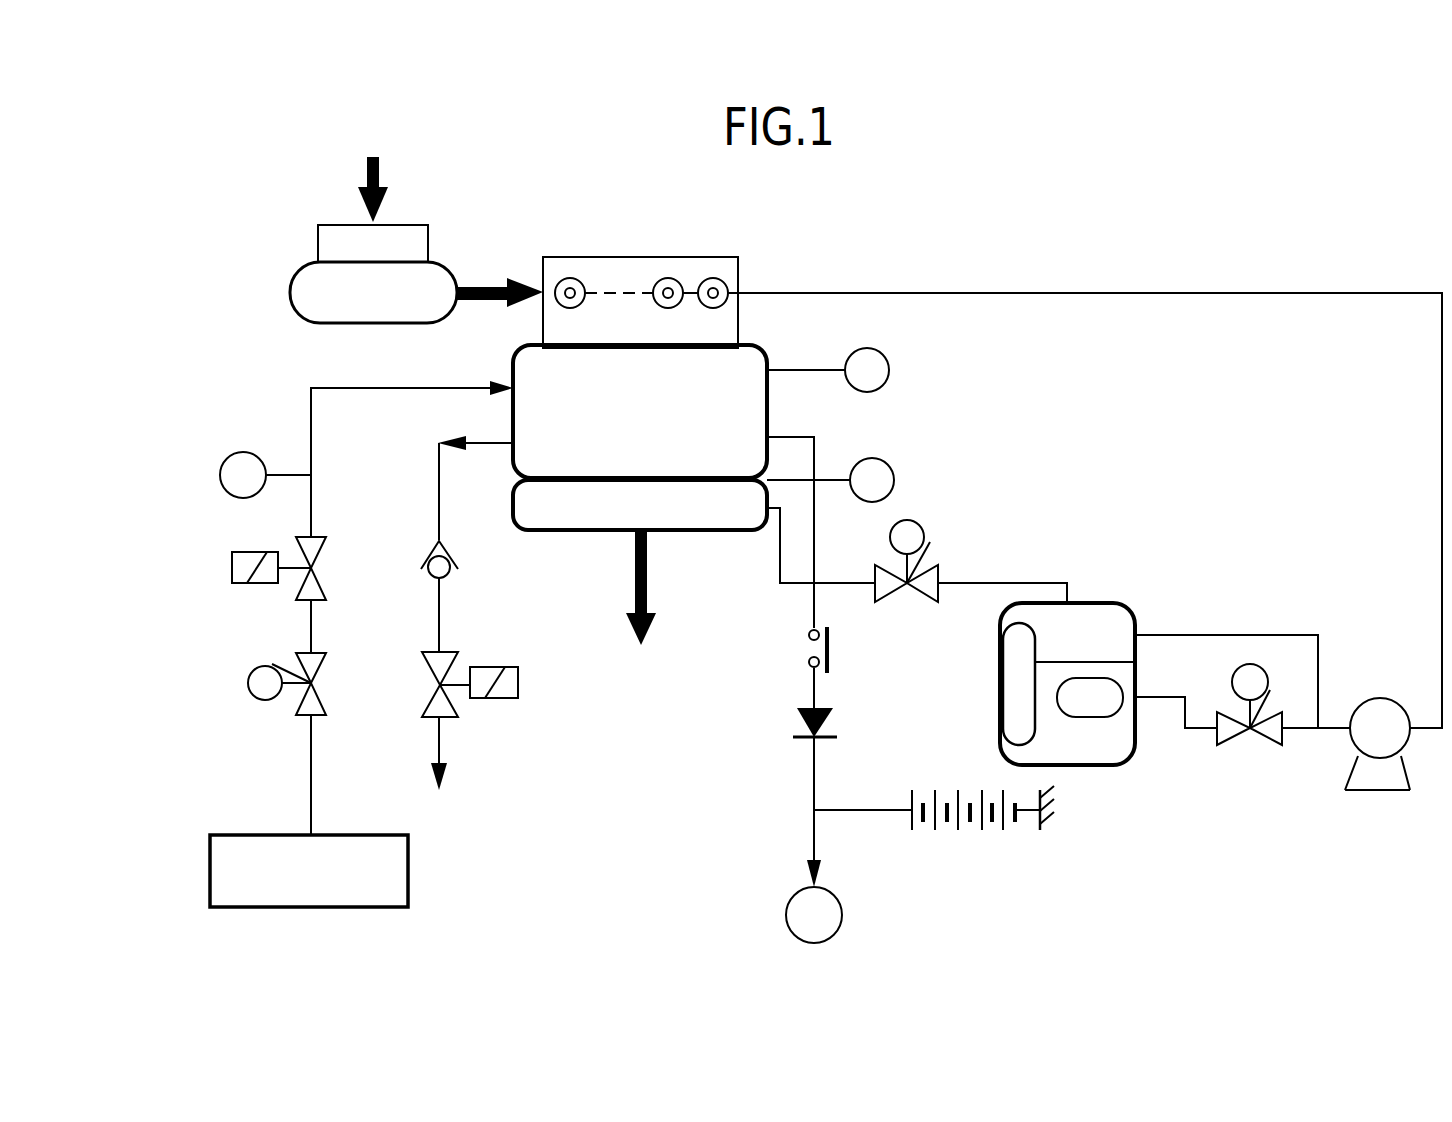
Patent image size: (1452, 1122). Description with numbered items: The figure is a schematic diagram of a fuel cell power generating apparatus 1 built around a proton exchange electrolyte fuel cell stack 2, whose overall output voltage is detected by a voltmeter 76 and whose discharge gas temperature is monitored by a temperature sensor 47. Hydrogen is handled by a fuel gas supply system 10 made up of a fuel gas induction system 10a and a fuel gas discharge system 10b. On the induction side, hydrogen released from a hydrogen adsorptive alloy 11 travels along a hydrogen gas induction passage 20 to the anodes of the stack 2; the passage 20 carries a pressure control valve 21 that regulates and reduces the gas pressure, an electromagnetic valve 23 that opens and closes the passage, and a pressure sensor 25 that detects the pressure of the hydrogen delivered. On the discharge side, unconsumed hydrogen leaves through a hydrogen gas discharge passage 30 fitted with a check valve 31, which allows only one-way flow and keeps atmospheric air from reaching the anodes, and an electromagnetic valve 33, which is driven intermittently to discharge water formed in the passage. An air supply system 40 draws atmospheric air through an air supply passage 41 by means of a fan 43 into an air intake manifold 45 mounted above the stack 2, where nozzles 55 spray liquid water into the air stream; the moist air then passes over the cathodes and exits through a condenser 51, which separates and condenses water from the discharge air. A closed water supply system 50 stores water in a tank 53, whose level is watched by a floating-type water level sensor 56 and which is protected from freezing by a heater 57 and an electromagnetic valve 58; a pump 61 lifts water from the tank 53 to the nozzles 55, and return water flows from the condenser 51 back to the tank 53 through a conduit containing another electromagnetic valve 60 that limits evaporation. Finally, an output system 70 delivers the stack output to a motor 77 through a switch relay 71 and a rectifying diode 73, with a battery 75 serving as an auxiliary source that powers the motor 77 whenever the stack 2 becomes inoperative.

The fuel cell power generating apparatus 1 is at (1006, 256).
The fuel cell stack 2 is at (652, 404).
The fuel gas supply system 10 is at (221, 401).
The fuel gas induction system 10a is at (413, 545).
The fuel gas discharge system 10b is at (414, 619).
The hydrogen adsorptive alloy 11 is at (212, 872).
The hydrogen gas induction passage 20 is at (311, 781).
The pressure control valve 21 is at (247, 683).
The electromagnetic valve 23 is at (232, 568).
The pressure sensor 25 is at (220, 475).
The hydrogen gas discharge passage 30 is at (480, 447).
The check valve 31 is at (455, 560).
The electromagnetic valve 33 is at (519, 685).
The air supply system 40 is at (250, 223).
The air supply passage 41 is at (476, 285).
The fan 43 is at (367, 323).
The air intake manifold 45 is at (541, 265).
The temperature sensor 47 is at (895, 480).
The water supply system 50 is at (1291, 575).
The condenser 51 is at (705, 528).
The tank 53 is at (1075, 766).
The nozzles 55 is at (572, 280).
The water level sensor 56 is at (1000, 690).
The heater 57 is at (1095, 680).
The electromagnetic valve 58 is at (1238, 748).
The electromagnetic valve 60 is at (921, 531).
The pump 61 is at (1375, 790).
The output system 70 is at (762, 695).
The switch relay 71 is at (833, 652).
The rectifying diode 73 is at (833, 715).
The battery 75 is at (968, 830).
The voltmeter 76 is at (890, 370).
The motor 77 is at (843, 920).